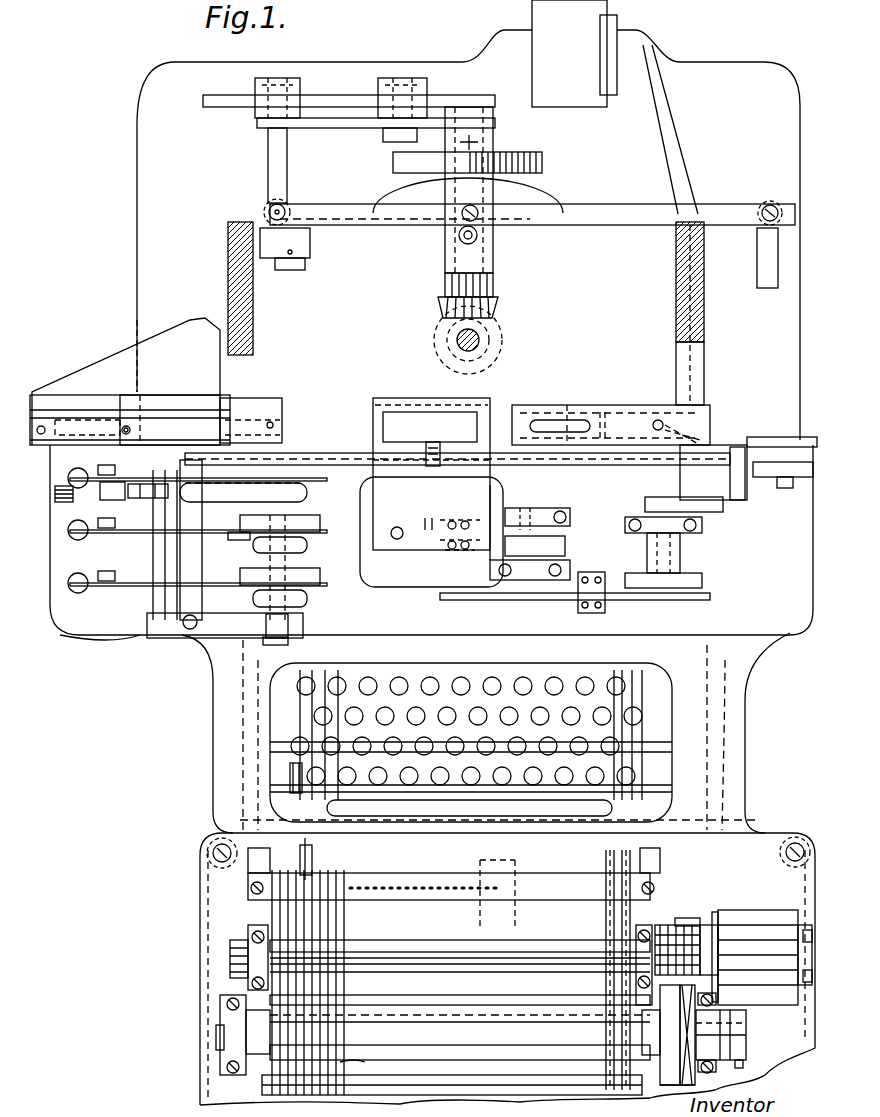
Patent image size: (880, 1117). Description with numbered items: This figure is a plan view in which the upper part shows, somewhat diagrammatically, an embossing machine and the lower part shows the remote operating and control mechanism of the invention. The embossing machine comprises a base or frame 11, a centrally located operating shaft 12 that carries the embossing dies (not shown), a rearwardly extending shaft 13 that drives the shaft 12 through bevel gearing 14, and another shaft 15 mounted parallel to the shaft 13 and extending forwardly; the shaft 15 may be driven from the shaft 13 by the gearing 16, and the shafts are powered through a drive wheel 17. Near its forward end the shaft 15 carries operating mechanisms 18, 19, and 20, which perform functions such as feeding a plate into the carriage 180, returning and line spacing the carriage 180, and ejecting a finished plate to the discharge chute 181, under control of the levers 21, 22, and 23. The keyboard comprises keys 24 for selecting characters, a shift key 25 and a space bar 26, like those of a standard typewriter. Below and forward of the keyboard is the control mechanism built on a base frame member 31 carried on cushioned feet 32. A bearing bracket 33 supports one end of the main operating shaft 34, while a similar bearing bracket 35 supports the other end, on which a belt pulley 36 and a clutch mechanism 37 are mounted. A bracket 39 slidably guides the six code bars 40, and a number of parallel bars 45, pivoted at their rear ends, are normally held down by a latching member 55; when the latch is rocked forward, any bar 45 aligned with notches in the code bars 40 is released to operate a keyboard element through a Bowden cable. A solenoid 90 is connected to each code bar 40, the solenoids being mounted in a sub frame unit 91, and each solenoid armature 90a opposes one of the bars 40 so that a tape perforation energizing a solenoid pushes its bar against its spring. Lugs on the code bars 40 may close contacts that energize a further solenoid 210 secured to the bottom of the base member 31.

The base or frame 11 is at (137, 182).
The operating shaft 12 is at (480, 340).
The rearwardly extending shaft 13 is at (493, 143).
The bevel gearing 14 is at (498, 308).
The shaft 15 is at (287, 162).
The gearing 16 is at (330, 96).
The drive wheel 17 is at (542, 163).
The operating mechanism 18 is at (305, 480).
The clutch mechanism 19 is at (318, 525).
The clutch mechanism 20 is at (323, 568).
The lever 21 is at (76, 490).
The key lever 22 is at (78, 540).
The key lever 23 is at (78, 593).
The keys 24 is at (430, 686).
The shift key 25 is at (296, 740).
The space bar 26 is at (469, 808).
The base frame member 31 is at (245, 916).
The cushioned feet or supports 32 is at (210, 845).
The bearing bracket 33 is at (222, 1013).
The main operating shaft 34 is at (222, 1058).
The bearing bracket 35 is at (720, 1010).
The belt pulley 36 is at (668, 1035).
The clutch mechanism 37 is at (677, 1073).
The bracket 39 is at (248, 975).
The code bars 40 is at (385, 948).
The bars or levers 45 is at (335, 1060).
The latching member 55 is at (454, 869).
The solenoid 90 is at (760, 935).
The solenoid armature 90a is at (705, 925).
The sub frame unit 91 is at (752, 915).
The carriage 180 is at (490, 408).
The discharge chute 181 is at (700, 405).
The solenoid 210 is at (498, 912).